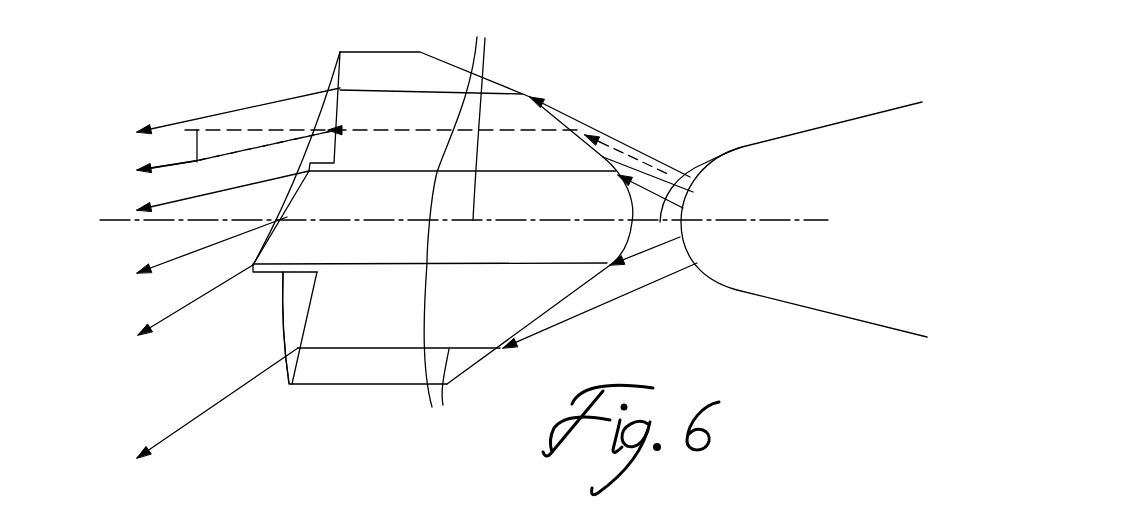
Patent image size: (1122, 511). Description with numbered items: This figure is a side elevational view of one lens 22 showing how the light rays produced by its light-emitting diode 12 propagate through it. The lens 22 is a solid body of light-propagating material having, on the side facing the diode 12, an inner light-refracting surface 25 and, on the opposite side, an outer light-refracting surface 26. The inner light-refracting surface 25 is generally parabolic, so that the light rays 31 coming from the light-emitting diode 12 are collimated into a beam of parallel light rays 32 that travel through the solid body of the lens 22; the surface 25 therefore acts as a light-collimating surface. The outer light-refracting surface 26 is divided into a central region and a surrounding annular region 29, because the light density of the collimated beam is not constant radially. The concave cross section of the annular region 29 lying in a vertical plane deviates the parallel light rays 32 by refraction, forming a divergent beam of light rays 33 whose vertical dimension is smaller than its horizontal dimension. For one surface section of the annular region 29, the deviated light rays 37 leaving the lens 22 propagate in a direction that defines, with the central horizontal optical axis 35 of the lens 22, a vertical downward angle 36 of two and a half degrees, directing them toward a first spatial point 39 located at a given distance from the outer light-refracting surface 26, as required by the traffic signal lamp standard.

The light-emitting diode 12 is at (750, 265).
The lens 22 is at (343, 363).
The inner light-refracting surface 25 is at (603, 157).
The outer light-refracting surface 26 is at (330, 72).
The annular region 29 is at (298, 313).
The light rays 31 is at (662, 168).
The parallel light rays 32 is at (432, 90).
The light rays 33 is at (210, 117).
The central horizontal optical axis 35 is at (788, 218).
The vertical downward angle 36 is at (199, 148).
The deviated light rays 37 is at (249, 147).
The first spatial point 39 is at (137, 174).